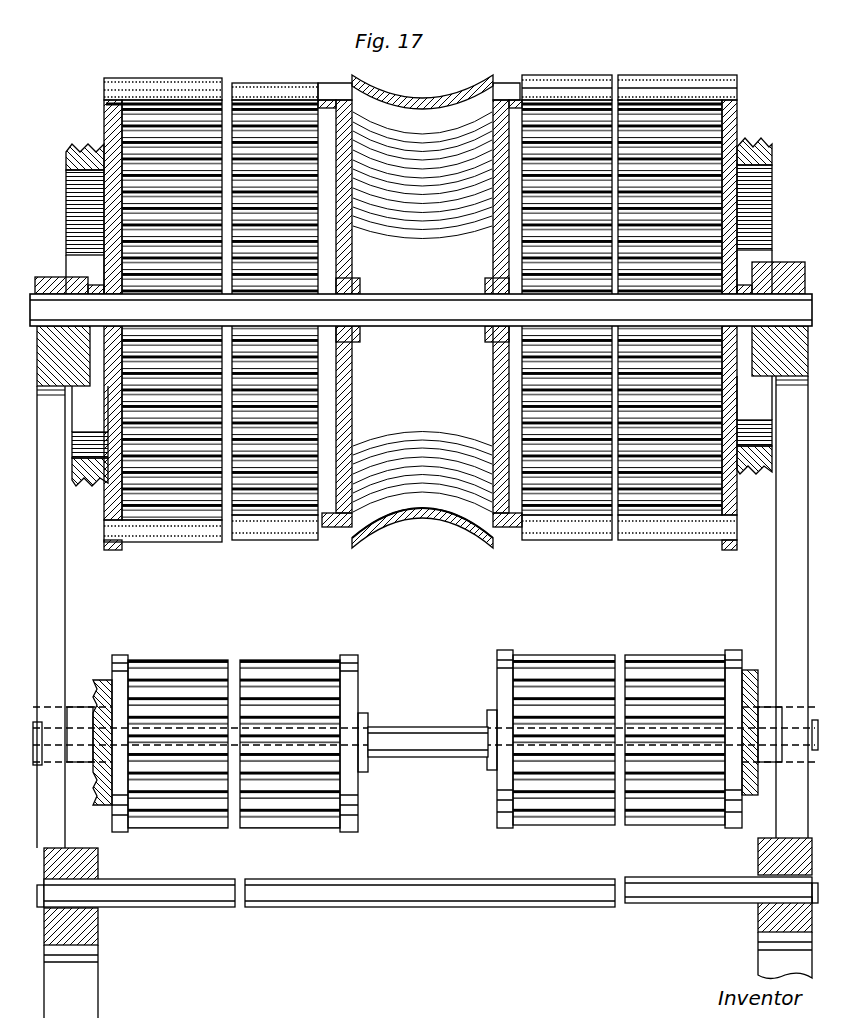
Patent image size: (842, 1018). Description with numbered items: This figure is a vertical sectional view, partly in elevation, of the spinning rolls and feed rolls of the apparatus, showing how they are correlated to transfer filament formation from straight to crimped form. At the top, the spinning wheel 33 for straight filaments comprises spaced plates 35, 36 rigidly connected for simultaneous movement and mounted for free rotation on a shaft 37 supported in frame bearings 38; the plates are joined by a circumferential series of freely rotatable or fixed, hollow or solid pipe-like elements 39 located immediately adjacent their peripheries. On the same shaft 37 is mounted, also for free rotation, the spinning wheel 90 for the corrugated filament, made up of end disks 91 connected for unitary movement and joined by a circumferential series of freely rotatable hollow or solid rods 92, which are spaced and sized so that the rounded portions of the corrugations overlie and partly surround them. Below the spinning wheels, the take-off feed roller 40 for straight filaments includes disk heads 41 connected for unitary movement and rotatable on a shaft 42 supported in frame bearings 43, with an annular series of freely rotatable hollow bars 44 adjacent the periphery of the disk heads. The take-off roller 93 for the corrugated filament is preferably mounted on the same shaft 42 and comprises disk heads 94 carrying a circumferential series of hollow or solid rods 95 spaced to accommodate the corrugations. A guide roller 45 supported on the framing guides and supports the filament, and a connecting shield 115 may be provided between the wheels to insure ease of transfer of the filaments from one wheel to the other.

The spinning wheel 33 is at (118, 88).
The plate 35 is at (102, 123).
The plate 36 is at (322, 95).
The shaft 37 is at (443, 328).
The frame bearing 38 is at (45, 277).
The pipe-like element 39 is at (275, 92).
The take-off feed roller 40 is at (360, 652).
The disk head 41 is at (120, 656).
The shaft 42 is at (378, 725).
The frame bearing 43 is at (90, 812).
The hollow bar 44 is at (300, 660).
The guide roller 45 is at (427, 912).
The spinning wheel 90 is at (712, 78).
The end disk 91 is at (518, 95).
The rod 92 is at (590, 72).
The take-off roller 93 is at (745, 637).
The disk head 94 is at (520, 642).
The rod 95 is at (585, 660).
The connecting shield 115 is at (422, 532).